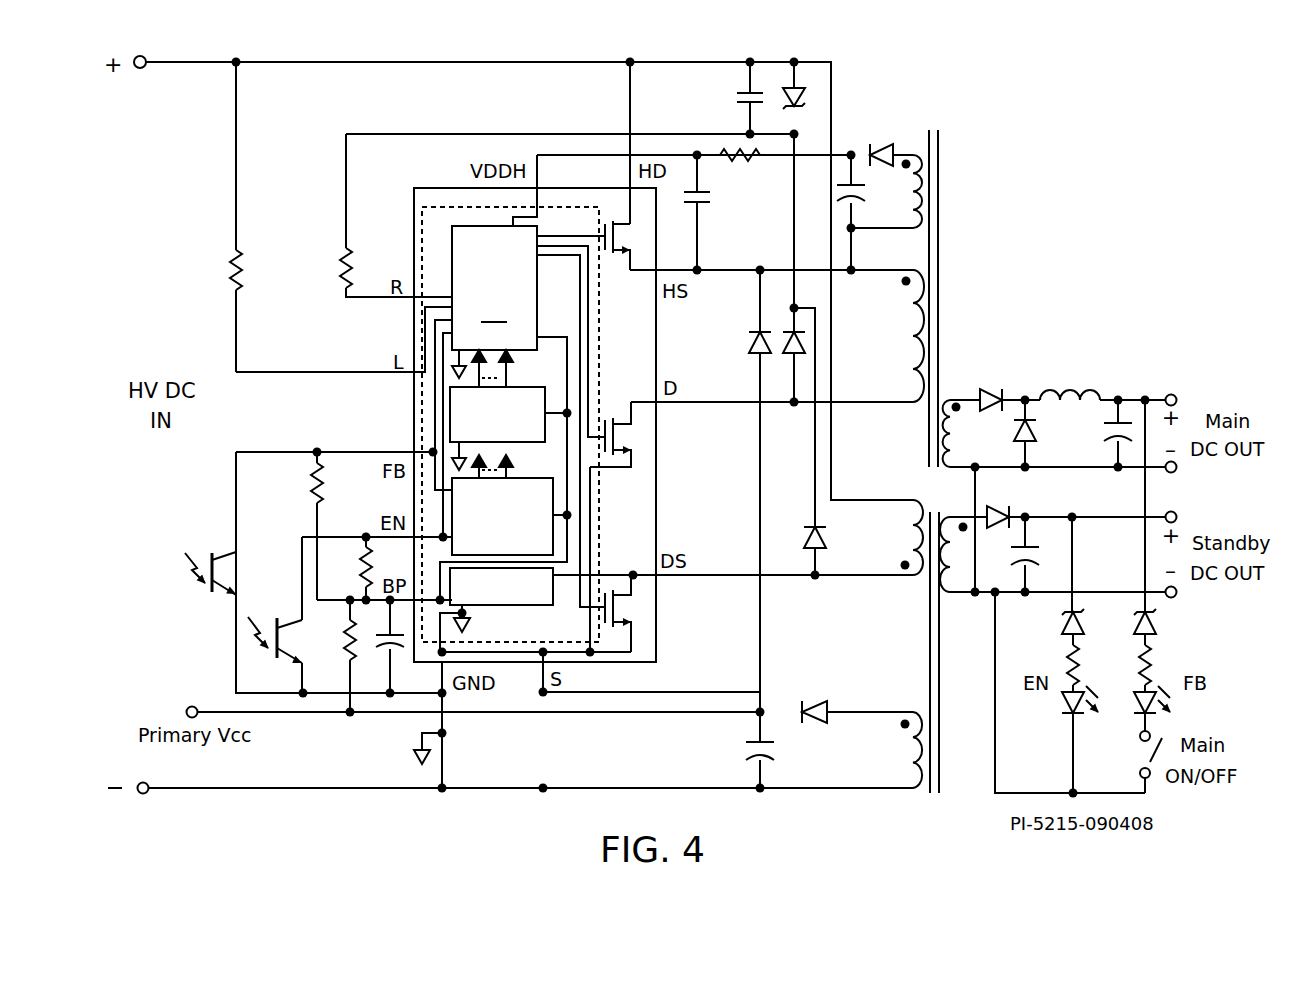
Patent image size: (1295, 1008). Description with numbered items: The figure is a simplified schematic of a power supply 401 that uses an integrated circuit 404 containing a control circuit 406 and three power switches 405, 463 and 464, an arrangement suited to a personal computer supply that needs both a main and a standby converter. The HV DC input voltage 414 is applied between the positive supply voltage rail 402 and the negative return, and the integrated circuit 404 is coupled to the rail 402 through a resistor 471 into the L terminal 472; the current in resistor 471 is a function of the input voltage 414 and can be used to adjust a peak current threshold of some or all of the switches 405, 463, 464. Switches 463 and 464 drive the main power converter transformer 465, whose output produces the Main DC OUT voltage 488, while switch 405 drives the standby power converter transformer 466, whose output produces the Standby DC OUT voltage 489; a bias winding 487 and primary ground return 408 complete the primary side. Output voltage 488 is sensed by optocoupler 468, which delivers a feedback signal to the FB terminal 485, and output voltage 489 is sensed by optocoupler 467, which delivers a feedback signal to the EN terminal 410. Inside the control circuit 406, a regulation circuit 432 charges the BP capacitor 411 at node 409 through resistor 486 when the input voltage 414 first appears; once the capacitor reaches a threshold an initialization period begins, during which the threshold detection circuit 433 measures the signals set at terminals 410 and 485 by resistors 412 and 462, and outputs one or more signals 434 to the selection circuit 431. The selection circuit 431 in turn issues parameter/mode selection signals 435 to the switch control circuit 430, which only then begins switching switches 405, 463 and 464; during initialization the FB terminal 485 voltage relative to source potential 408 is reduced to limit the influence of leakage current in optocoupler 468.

The power supply 401 is at (297, 846).
The positive supply voltage rail 402 is at (182, 60).
The integrated circuit 404 is at (413, 213).
The power switch 405 is at (626, 610).
The control circuit 406 is at (461, 205).
The source potential 408 is at (537, 745).
The bypass capacitor node 409 is at (378, 592).
The EN terminal 410 is at (395, 507).
The BP capacitor 411 is at (379, 646).
The resistor 412 is at (360, 576).
The input voltage 414 is at (164, 370).
The switch control circuit 430 is at (494, 288).
The selection circuit 431 is at (450, 400).
The regulation circuit 432 is at (485, 612).
The threshold detection circuit 433 is at (553, 492).
The signals 434 is at (512, 448).
The parameter/mode selection signals 435 is at (513, 358).
The resistor 462 is at (308, 488).
The power switch 463 is at (618, 413).
The power switch 464 is at (618, 260).
The main power converter transformer 465 is at (942, 213).
The standby power converter transformer 466 is at (922, 633).
The optocoupler 467 is at (287, 663).
The optocoupler 468 is at (203, 550).
The resistor 471 is at (230, 268).
The L terminal 472 is at (392, 360).
The FB terminal 485 is at (410, 452).
The resistor 486 is at (345, 645).
The bias winding 487 is at (905, 760).
The Main DC OUT voltage 488 is at (1234, 400).
The Standby DC OUT voltage 489 is at (1230, 524).